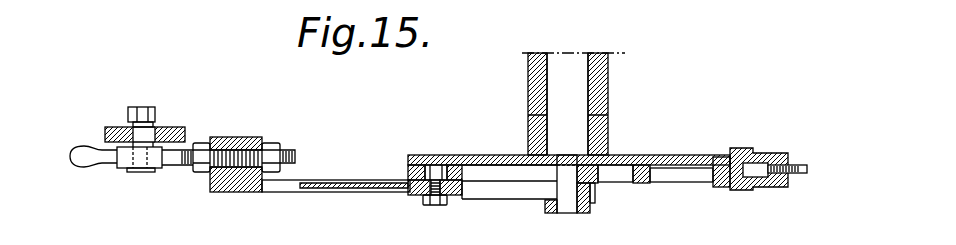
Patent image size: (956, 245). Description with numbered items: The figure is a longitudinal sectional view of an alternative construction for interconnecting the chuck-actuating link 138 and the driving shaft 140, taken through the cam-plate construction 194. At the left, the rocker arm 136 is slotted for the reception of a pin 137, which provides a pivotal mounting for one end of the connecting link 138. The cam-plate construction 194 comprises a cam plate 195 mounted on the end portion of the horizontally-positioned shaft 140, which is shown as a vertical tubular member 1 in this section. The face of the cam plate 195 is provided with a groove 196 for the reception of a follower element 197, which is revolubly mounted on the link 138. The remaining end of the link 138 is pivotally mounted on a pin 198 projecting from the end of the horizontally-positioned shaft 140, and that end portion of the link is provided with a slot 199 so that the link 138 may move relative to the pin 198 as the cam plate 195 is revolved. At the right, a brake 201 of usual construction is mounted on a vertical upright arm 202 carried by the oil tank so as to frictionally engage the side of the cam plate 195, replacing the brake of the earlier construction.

The tube wall 1 is at (530, 82).
The rocker arm 136 is at (165, 128).
The pin 137 is at (140, 172).
The connecting link 138 is at (255, 192).
The horizontally-positioned shaft 140 is at (573, 95).
The cam-plate construction 194 is at (606, 160).
The cam plate 195 is at (473, 155).
The groove 196 is at (408, 162).
The follower element 197 is at (425, 155).
The pin 198 is at (568, 202).
The slot 199 is at (493, 187).
The brake 201 is at (738, 157).
The vertical upright arm 202 is at (755, 190).